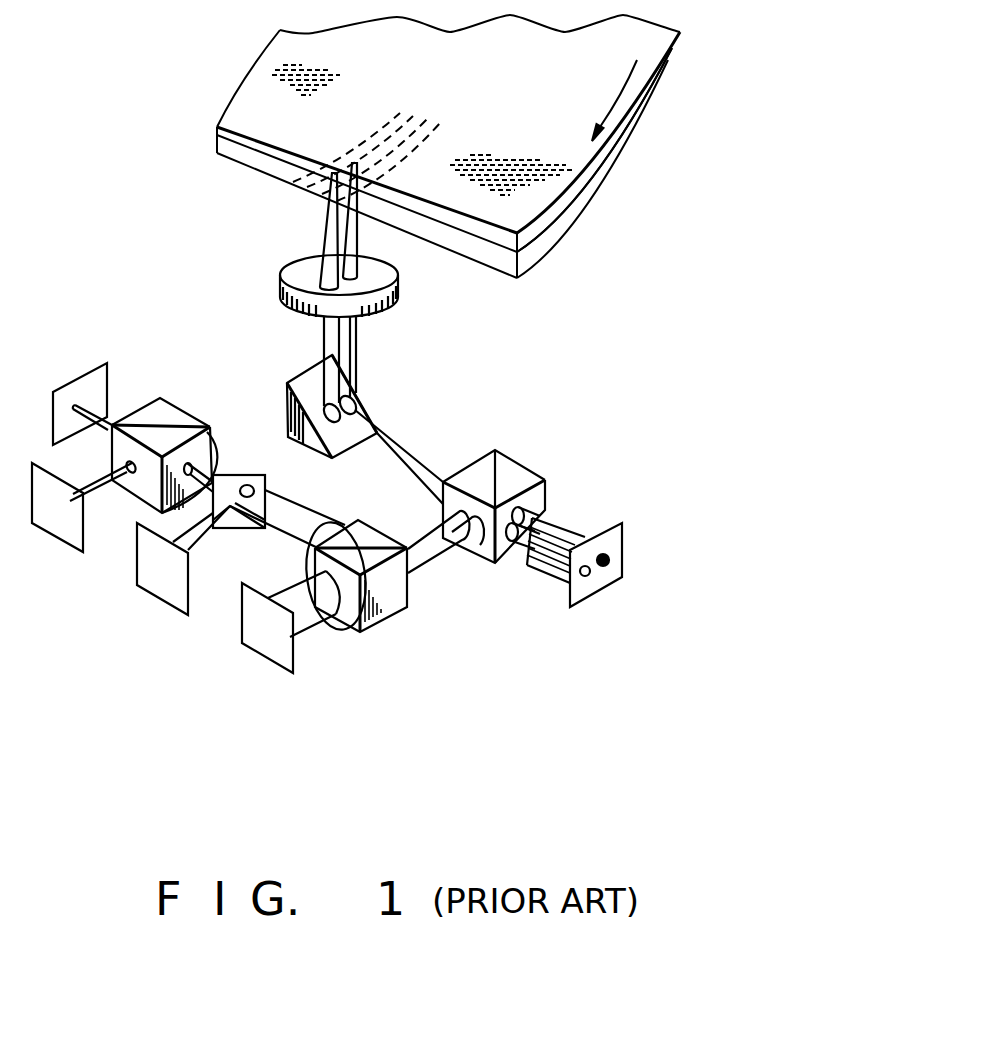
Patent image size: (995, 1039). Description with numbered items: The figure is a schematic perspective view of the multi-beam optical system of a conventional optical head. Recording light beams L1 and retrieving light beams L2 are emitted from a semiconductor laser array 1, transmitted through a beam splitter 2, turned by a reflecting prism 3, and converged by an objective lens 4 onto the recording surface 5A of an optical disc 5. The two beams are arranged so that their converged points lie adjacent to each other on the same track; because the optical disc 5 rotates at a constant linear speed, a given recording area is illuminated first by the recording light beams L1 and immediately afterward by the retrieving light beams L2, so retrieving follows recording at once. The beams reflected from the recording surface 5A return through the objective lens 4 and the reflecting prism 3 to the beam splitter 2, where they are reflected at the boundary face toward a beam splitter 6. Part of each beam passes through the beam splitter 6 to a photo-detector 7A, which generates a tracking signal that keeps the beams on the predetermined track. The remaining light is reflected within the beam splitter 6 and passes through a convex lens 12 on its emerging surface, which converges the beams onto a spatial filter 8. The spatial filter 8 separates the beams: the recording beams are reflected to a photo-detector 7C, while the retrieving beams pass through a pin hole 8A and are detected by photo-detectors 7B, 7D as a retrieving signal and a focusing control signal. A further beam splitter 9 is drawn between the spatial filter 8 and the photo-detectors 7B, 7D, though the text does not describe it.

The semiconductor laser array 1 is at (620, 537).
The beam splitter 2 is at (522, 472).
The reflecting prism 3 is at (303, 372).
The objective lens 4 is at (398, 287).
The optical disc 5 is at (218, 104).
The recording surface 5A is at (613, 163).
The beam splitter 6 is at (395, 613).
The photo-detector 7A is at (260, 652).
The photo-detector 7B is at (88, 382).
The photo-detector 7C is at (153, 588).
The photo-detector 7D is at (45, 528).
The spatial filter 8 is at (247, 473).
The pin hole 8A is at (253, 492).
The beam splitter 9 is at (178, 412).
The convex lens 12 is at (345, 520).
The recording light beams L1 is at (535, 520).
The retrieving light beams L2 is at (519, 548).